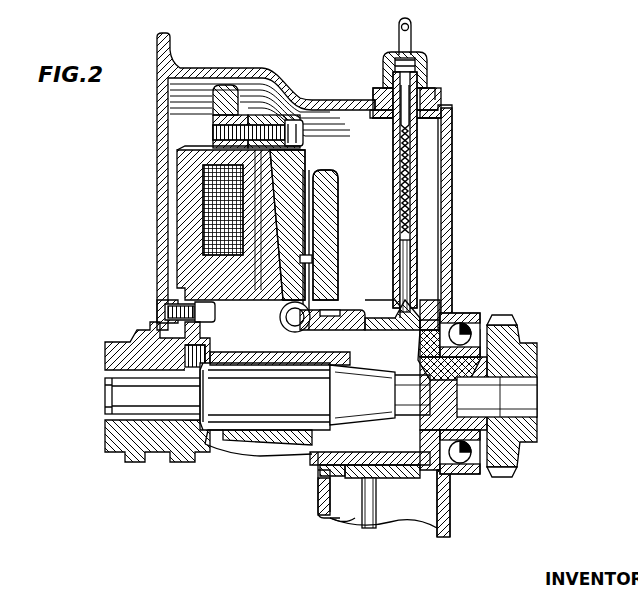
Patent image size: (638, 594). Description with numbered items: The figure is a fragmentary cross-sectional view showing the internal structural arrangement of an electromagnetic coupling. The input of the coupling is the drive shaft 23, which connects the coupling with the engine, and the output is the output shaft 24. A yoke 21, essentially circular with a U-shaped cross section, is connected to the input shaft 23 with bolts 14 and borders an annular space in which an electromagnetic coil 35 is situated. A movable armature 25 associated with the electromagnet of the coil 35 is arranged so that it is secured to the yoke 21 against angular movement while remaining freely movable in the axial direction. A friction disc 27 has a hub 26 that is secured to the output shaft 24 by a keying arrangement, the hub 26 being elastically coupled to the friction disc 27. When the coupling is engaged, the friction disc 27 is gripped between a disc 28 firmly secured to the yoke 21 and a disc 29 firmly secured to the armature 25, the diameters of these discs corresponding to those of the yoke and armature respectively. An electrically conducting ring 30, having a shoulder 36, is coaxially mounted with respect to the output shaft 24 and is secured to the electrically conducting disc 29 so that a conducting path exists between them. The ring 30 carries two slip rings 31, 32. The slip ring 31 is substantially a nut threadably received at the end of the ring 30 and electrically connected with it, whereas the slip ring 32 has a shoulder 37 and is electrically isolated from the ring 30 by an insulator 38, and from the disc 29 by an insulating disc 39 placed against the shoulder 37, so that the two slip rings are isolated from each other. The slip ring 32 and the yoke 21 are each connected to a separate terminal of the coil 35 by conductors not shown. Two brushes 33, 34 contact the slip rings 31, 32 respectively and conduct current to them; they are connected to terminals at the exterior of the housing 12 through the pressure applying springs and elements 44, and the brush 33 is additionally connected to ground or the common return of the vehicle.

The housing 12 is at (456, 135).
The bolts 14 is at (168, 316).
The yoke 21 is at (200, 170).
The drive shaft 23 is at (128, 350).
The output shaft 24 is at (382, 430).
The armature 25 is at (300, 163).
The hub 26 is at (256, 432).
The friction disc 27 is at (335, 195).
The disc 28 is at (300, 136).
The disc 29 is at (318, 230).
The electrically conducting ring 30 is at (358, 312).
The slip ring 31 is at (445, 312).
The slip ring 32 is at (388, 478).
The brush 33 is at (405, 262).
The brush 34 is at (370, 526).
The electromagnetic coil 35 is at (208, 200).
The shoulder 36 is at (318, 466).
The shoulder 37 is at (343, 290).
The insulator 38 is at (412, 305).
The insulating disc 39 is at (338, 518).
The pressure applying springs and elements 44 is at (410, 32).